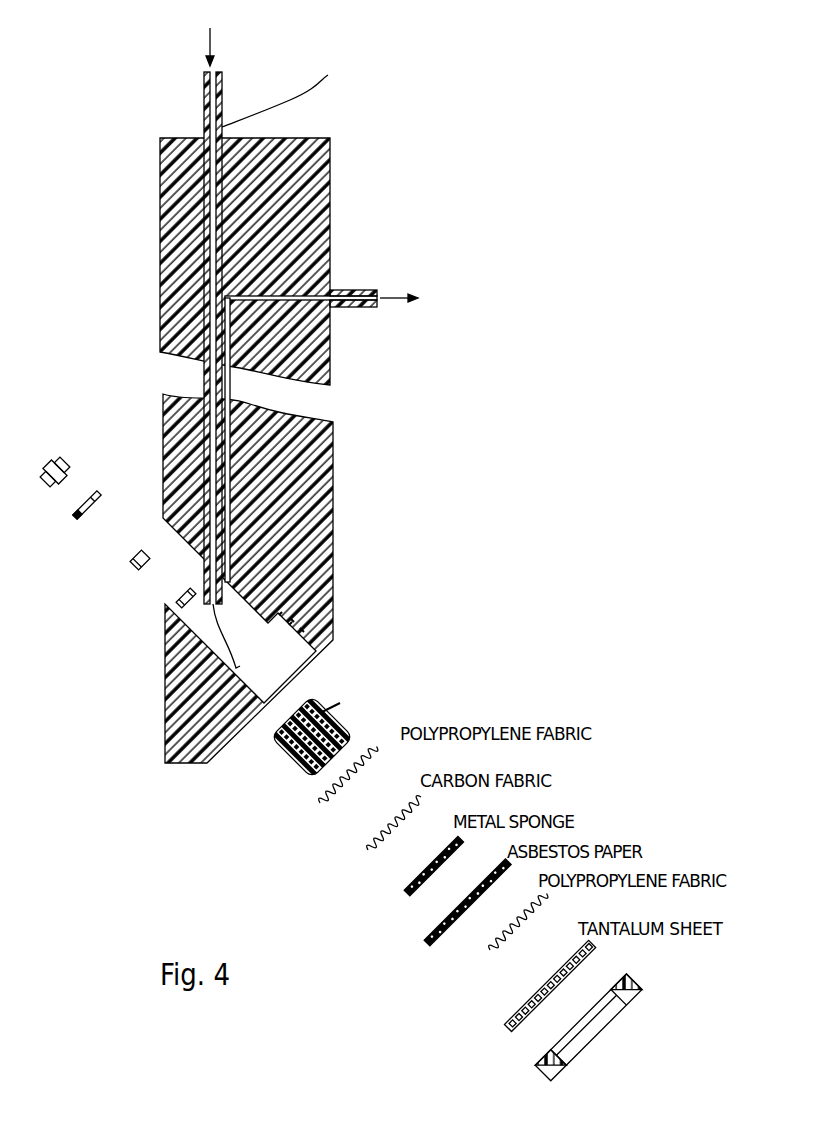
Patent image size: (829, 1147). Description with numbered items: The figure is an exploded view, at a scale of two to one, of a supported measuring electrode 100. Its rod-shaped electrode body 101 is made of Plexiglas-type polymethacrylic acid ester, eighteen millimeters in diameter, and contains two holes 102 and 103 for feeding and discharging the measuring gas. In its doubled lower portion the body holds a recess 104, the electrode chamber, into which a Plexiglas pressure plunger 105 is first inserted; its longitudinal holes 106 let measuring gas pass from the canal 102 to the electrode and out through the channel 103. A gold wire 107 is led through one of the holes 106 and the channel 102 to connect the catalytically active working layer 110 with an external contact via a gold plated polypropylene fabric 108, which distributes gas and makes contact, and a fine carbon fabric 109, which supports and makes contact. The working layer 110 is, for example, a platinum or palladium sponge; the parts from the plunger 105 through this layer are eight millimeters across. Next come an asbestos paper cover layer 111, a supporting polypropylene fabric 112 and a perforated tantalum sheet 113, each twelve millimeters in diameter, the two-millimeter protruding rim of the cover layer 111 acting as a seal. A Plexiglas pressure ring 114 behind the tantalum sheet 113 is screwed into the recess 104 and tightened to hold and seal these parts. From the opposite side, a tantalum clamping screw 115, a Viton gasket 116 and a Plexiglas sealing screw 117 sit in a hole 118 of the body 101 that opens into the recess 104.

The measuring electrode 100 is at (333, 485).
The electrode body 101 is at (320, 212).
The hole 102 is at (204, 218).
The hole 103 is at (318, 305).
The recess 104 is at (188, 658).
The pressure plunger 105 is at (286, 759).
The longitudinal holes 106 is at (333, 712).
The gold wire 107 is at (290, 100).
The gold plated polypropylene fabric 108 is at (320, 803).
The fine carbon fabric 109 is at (368, 850).
The working layer 110 is at (407, 893).
The asbestos paper cover layer 111 is at (427, 943).
The polypropylene fabric 112 is at (488, 956).
The perforated tantalum sheet 113 is at (508, 1024).
The pressure ring 114 is at (552, 1070).
The clamping screw 115 is at (131, 563).
The gasket 116 is at (100, 493).
The sealing screw 117 is at (70, 458).
The hole 118 is at (174, 600).